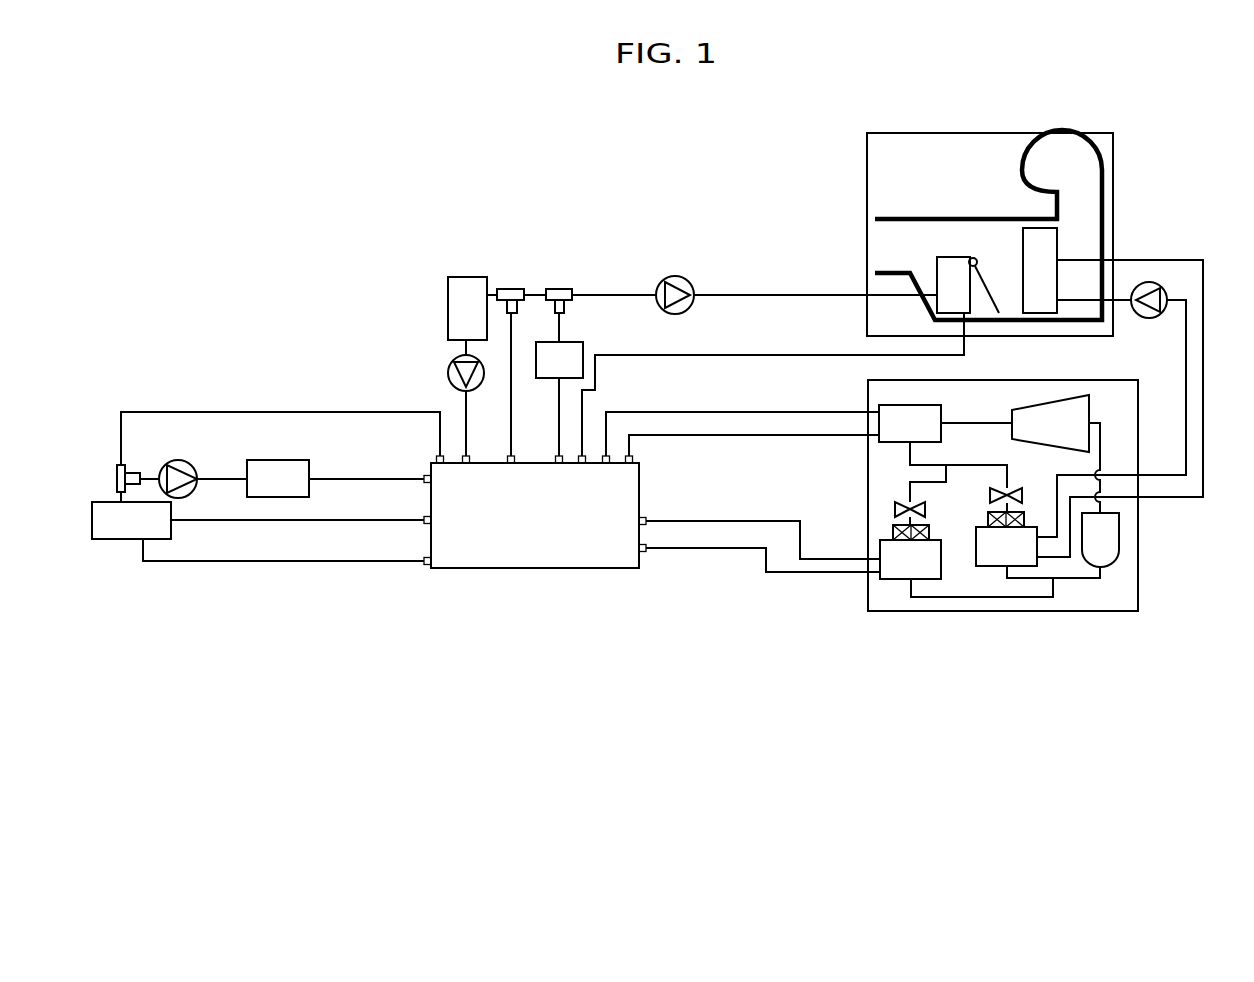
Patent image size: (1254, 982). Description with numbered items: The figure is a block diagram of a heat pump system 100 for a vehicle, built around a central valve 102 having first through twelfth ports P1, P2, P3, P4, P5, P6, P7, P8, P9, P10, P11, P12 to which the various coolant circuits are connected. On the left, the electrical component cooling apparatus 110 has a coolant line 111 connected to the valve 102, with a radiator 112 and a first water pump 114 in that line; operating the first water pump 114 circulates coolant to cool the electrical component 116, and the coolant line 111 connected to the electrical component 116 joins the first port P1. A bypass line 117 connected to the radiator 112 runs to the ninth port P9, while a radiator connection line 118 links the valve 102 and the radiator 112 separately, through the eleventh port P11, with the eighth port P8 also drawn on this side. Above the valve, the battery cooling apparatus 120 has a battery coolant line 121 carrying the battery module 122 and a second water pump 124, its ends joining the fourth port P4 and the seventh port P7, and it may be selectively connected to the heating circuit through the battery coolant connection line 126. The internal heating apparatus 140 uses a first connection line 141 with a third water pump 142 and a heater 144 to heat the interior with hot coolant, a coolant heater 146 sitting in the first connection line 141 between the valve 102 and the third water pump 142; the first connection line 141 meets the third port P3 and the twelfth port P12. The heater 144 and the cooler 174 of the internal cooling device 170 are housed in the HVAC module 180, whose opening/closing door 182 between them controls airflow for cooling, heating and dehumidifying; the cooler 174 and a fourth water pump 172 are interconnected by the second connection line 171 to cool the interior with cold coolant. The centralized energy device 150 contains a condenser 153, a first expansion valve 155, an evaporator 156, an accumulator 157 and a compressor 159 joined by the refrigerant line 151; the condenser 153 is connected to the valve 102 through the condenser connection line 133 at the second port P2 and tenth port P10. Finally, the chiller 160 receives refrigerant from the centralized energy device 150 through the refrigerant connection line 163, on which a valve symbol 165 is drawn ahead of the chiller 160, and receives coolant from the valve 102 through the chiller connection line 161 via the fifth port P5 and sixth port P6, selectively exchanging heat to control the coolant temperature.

The heat pump system 100 is at (655, 118).
The valve 102 is at (536, 568).
The electrical component cooling apparatus 110 is at (235, 372).
The coolant line 111 is at (345, 518).
The radiator 112 is at (114, 540).
The first water pump 114 is at (178, 460).
The electrical component 116 is at (276, 460).
The bypass line 117 is at (296, 411).
The radiator connection line 118 is at (282, 562).
The battery cooling apparatus 120 is at (489, 266).
The battery coolant line 121 is at (467, 405).
The battery module 122 is at (463, 276).
The second water pump 124 is at (449, 376).
The battery coolant connection line 126 is at (536, 289).
The condenser connection line 133 is at (768, 413).
The internal heating apparatus 140 is at (815, 276).
The first connection line 141 is at (562, 332).
The third water pump 142 is at (676, 276).
The heater 144 is at (952, 257).
The coolant heater 146 is at (584, 348).
The centralized energy device 150 is at (1130, 612).
The refrigerant line 151 is at (980, 466).
The condenser 153 is at (886, 443).
The first expansion valve 155 is at (1023, 494).
The evaporator 156 is at (1000, 570).
The accumulator 157 is at (1120, 528).
The compressor 159 is at (1050, 402).
The chiller 160 is at (896, 582).
The chiller connection line 161 is at (745, 521).
The refrigerant connection line 163 is at (938, 485).
The expansion valve 165 is at (893, 509).
The internal cooling device 170 is at (1211, 276).
The second connection line 171 is at (1203, 389).
The fourth water pump 172 is at (1149, 281).
The cooler 174 is at (1021, 240).
The HVAC module 180 is at (988, 132).
The opening/closing door 182 is at (985, 290).
The first port P1 is at (422, 474).
The second port P2 is at (636, 461).
The third port P3 is at (584, 456).
The fourth port P4 is at (463, 456).
The fifth port P5 is at (647, 518).
The sixth port P6 is at (647, 553).
The seventh port P7 is at (508, 456).
The eighth port P8 is at (424, 527).
The ninth port P9 is at (437, 456).
The tenth port P10 is at (609, 456).
The eleventh port P11 is at (424, 568).
The twelfth port P12 is at (556, 456).